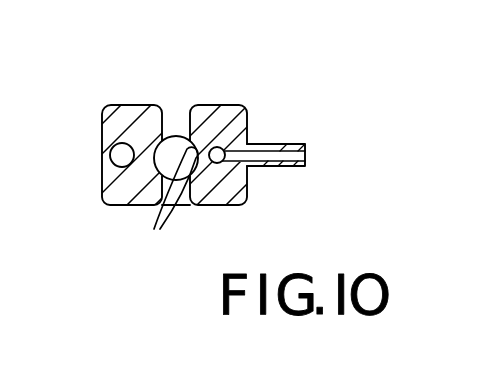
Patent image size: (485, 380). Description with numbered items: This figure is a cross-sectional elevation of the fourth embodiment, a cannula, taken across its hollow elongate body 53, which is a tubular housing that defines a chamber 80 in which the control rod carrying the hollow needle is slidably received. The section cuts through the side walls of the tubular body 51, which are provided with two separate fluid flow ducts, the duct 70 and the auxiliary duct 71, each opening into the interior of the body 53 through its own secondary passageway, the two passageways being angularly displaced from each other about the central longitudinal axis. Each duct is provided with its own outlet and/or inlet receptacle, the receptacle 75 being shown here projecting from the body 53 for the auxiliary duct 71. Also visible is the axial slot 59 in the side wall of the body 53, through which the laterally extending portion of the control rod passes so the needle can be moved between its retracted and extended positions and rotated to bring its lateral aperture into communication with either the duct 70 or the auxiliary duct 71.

The tubular body 51 is at (171, 206).
The hollow elongate body 53 is at (244, 109).
The axial slot 59 is at (180, 136).
The duct 70 is at (115, 152).
The auxiliary duct 71 is at (221, 163).
The receptacle 75 is at (278, 167).
The chamber 80 is at (163, 152).